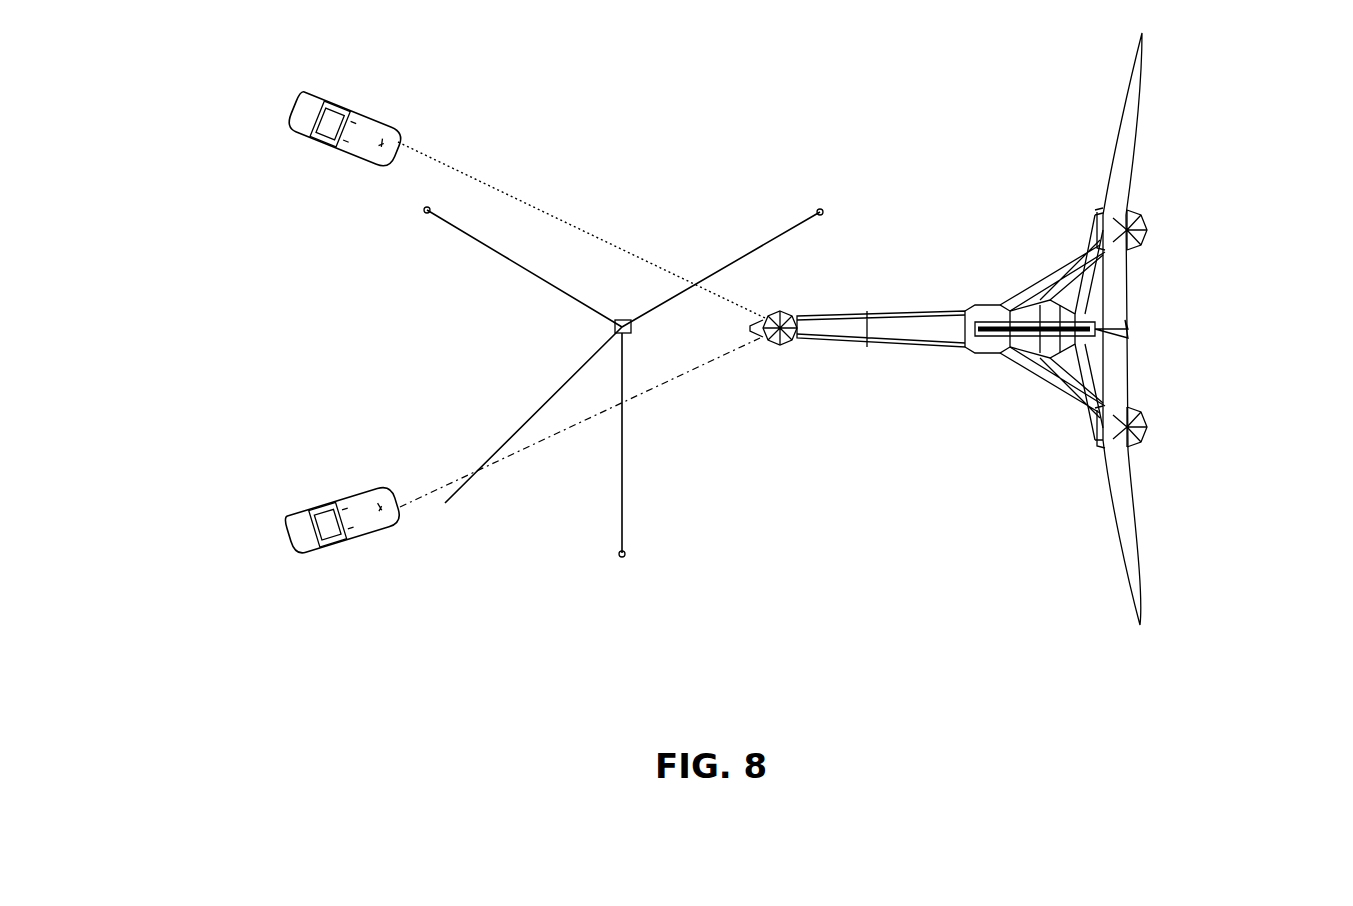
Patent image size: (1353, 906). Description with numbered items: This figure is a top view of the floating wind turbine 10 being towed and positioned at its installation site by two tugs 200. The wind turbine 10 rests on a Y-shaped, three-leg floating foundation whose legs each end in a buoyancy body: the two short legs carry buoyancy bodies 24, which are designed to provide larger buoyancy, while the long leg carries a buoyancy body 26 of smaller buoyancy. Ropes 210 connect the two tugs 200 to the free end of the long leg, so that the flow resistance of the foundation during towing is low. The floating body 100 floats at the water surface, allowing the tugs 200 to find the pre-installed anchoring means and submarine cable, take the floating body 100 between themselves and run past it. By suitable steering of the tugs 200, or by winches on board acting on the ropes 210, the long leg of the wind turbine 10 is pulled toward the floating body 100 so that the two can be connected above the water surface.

The floating wind turbine 10 is at (996, 183).
The buoyancy body 24 is at (1140, 230).
The buoyancy body 26 is at (777, 345).
The floating body 100 is at (620, 324).
The tug 200 is at (300, 118).
The rope 210 is at (555, 218).